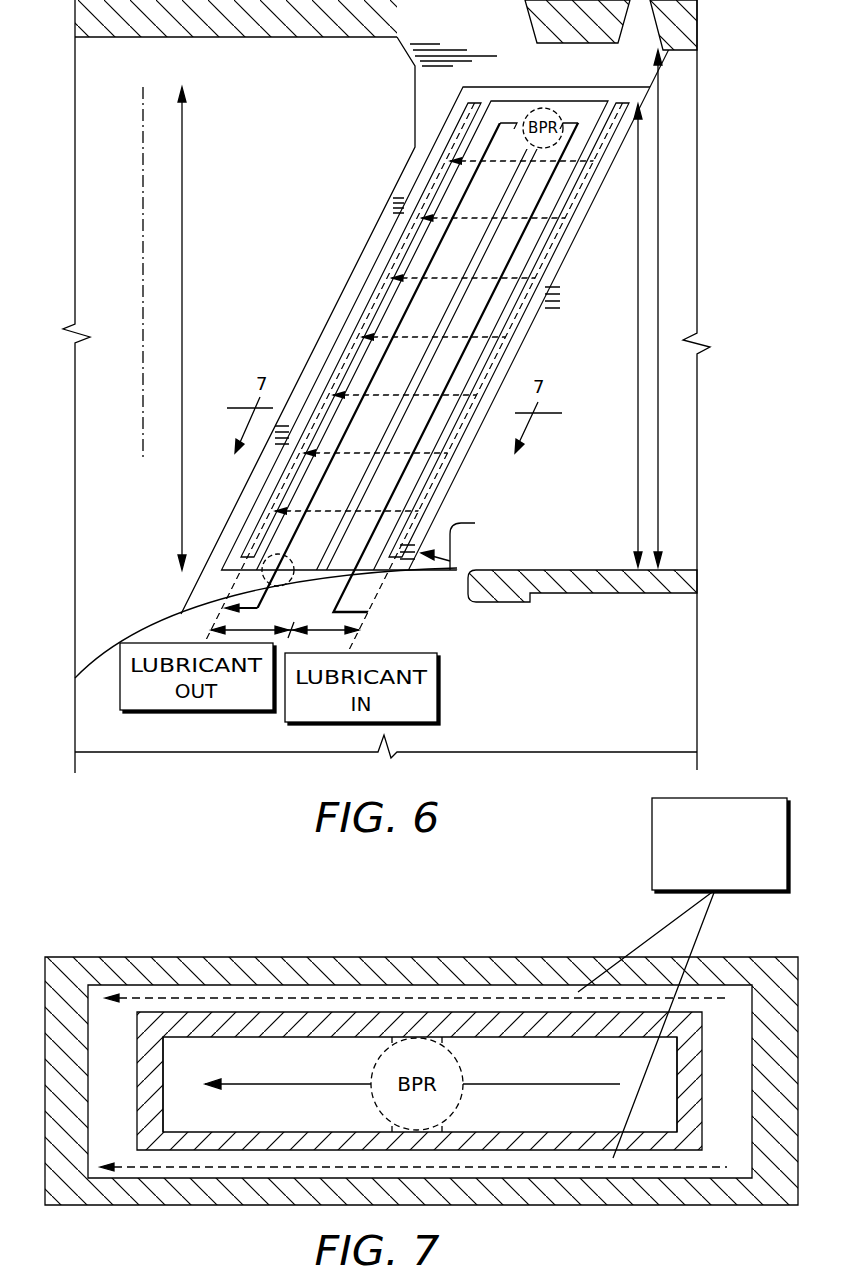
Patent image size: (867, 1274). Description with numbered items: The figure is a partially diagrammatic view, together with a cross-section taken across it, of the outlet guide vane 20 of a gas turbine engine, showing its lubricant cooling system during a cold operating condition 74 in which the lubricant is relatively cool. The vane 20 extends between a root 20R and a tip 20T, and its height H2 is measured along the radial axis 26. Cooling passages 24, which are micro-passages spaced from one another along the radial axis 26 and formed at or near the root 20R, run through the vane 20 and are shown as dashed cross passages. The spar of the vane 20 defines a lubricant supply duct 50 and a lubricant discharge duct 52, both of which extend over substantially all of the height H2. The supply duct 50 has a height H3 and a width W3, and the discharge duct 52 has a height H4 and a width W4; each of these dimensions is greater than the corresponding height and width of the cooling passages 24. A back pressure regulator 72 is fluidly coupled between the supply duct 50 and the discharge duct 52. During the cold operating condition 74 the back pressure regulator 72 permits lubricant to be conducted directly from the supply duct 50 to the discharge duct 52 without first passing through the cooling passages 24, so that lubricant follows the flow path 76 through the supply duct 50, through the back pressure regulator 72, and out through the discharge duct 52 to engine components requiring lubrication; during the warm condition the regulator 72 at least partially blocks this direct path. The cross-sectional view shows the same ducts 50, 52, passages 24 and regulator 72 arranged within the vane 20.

In FIG. 6, the outlet guide vane 20 is at (652, 103).
In FIG. 6, the tip 20T is at (664, 70).
In FIG. 6, the root 20R is at (450, 572).
In FIG. 6, the cooling passages 24 is at (453, 268).
In FIG. 7, the cooling passages 24 is at (720, 798).
In FIG. 6, the radial axis 26 is at (140, 170).
In FIG. 6, the lubricant supply duct 50 is at (415, 538).
In FIG. 7, the lubricant supply duct 50 is at (528, 1058).
In FIG. 6, the lubricant discharge duct 52 is at (318, 492).
In FIG. 7, the lubricant discharge duct 52 is at (276, 1062).
In FIG. 6, the back pressure regulator 72 is at (551, 117).
In FIG. 7, the back pressure regulator 72 is at (418, 1048).
In FIG. 6, the cold operating condition 74 is at (385, 137).
In FIG. 6, the flow path 76 is at (396, 356).
In FIG. 6, the height of the outlet guide vane H2 is at (660, 443).
In FIG. 6, the height of the lubricant supply duct H3 is at (638, 487).
In FIG. 6, the height of the lubricant discharge duct H4 is at (182, 283).
In FIG. 6, the width of the lubricant supply duct W3 is at (333, 650).
In FIG. 6, the width of the lubricant discharge duct W4 is at (222, 628).